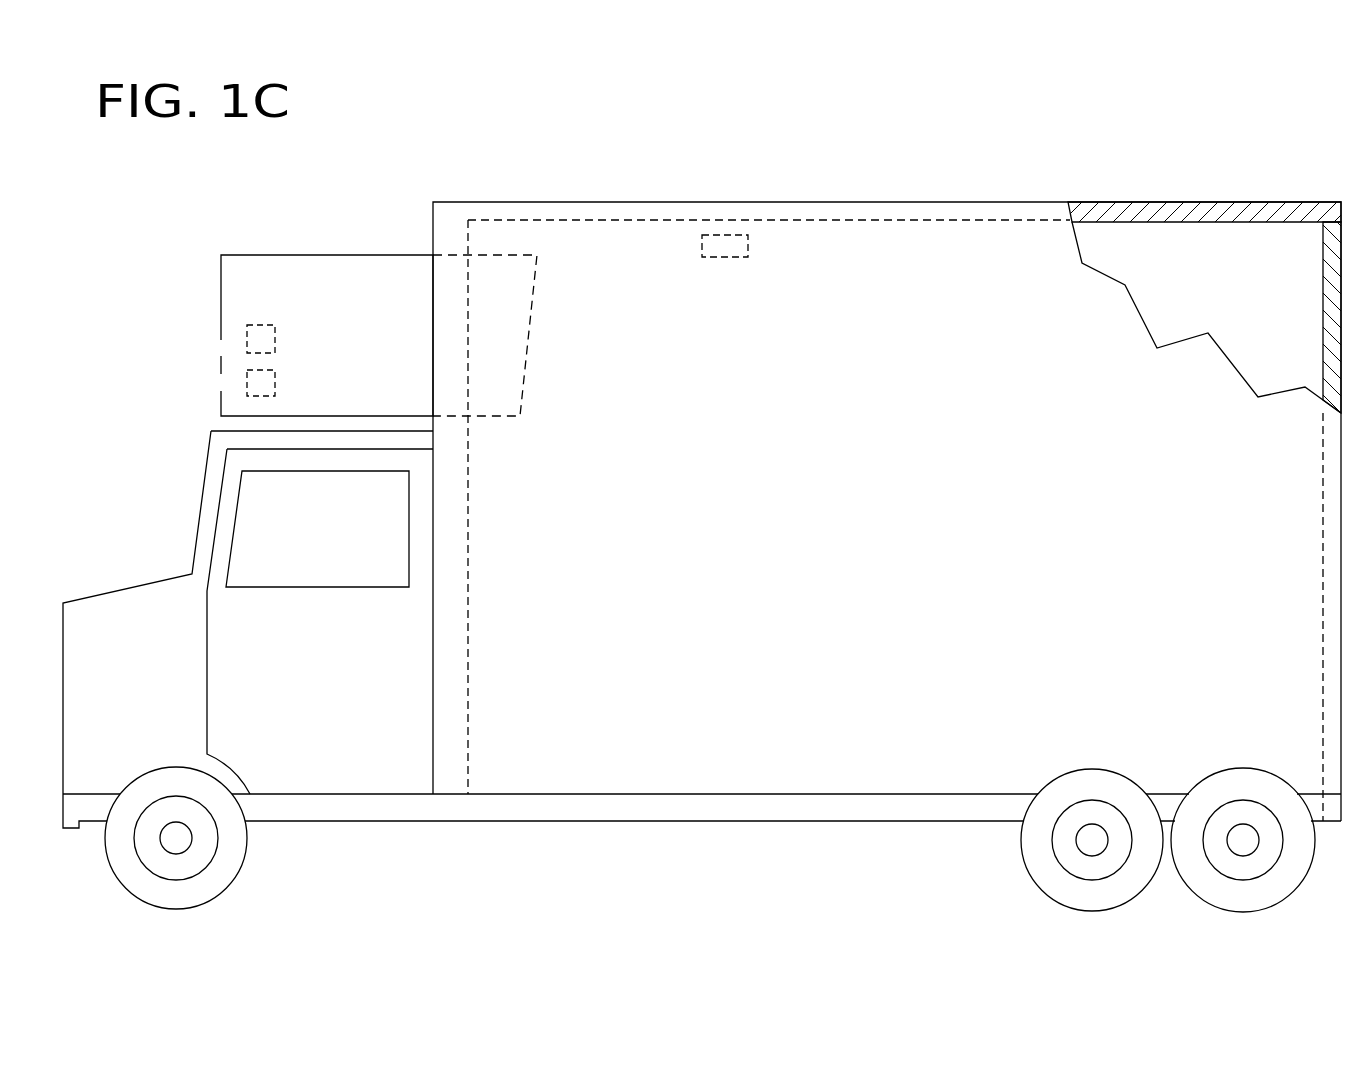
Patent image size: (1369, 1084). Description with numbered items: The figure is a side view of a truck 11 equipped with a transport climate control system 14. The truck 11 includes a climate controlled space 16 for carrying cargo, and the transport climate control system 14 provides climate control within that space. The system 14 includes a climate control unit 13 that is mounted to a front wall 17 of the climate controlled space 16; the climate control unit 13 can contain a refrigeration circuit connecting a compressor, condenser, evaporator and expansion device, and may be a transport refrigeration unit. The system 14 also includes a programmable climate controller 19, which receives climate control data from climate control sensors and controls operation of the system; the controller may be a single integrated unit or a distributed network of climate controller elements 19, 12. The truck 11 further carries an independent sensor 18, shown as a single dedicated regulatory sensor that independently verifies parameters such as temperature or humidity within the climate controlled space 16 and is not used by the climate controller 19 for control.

The truck 11 is at (950, 158).
The climate controller element 12 is at (247, 336).
The climate control unit 13 is at (300, 255).
The transport climate control system 14 is at (290, 274).
The climate controlled space 16 is at (1152, 253).
The front wall 17 is at (476, 270).
The independent sensor 18 is at (713, 235).
The climate controller 19 is at (247, 381).